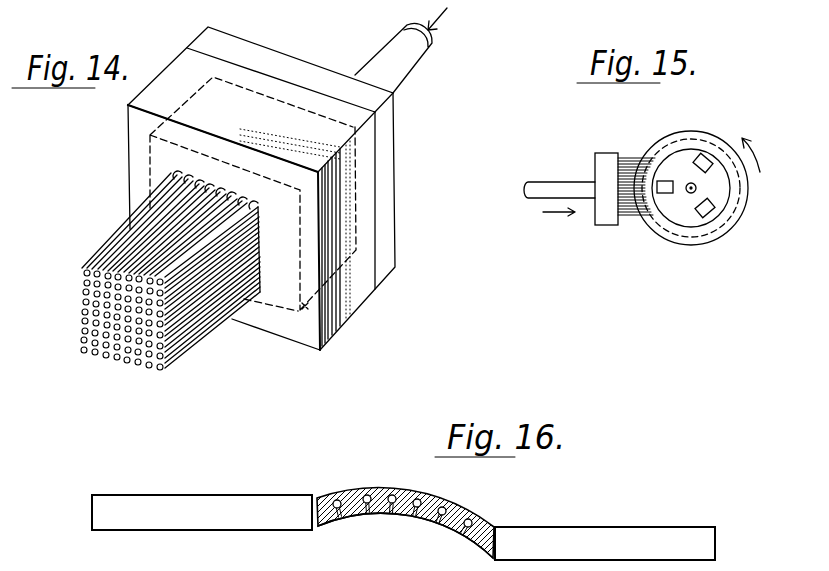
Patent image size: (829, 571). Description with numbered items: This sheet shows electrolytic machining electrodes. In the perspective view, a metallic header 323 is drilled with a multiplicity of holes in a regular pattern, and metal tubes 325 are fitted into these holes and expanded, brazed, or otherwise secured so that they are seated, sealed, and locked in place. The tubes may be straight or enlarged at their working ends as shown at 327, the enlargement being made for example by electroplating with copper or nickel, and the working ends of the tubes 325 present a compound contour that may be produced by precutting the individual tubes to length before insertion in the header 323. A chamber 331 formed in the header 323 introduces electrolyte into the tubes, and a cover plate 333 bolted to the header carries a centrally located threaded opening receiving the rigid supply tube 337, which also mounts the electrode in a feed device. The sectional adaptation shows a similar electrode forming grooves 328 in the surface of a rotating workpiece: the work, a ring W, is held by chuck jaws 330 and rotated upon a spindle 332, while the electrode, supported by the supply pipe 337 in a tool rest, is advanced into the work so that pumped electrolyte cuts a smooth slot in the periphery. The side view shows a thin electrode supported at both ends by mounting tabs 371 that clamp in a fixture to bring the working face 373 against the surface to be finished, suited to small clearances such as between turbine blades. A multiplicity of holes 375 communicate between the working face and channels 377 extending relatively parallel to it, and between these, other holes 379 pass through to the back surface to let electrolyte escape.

In FIG. 14, the metallic header 323 is at (293, 330).
In FIG. 15, the metallic header 323 is at (607, 222).
In FIG. 14, the metal tubes 325 is at (238, 296).
In FIG. 15, the metal tubes 325 is at (625, 162).
In FIG. 14, the enlarged working ends 327 is at (173, 358).
In FIG. 14, the chamber 331 is at (338, 322).
In FIG. 14, the cover plate 333 is at (386, 170).
In FIG. 14, the rigid supply tube 337 is at (390, 52).
In FIG. 15, the rigid supply tube 337 is at (539, 183).
In FIG. 15, the grooves 328 is at (702, 140).
In FIG. 15, the chuck jaws 330 is at (700, 211).
In FIG. 15, the spindle 332 is at (697, 189).
In FIG. 15, the ring W is at (712, 238).
In FIG. 16, the mounting tabs 371 is at (185, 503).
In FIG. 16, the working face 373 is at (350, 516).
In FIG. 16, the holes 375 is at (438, 520).
In FIG. 16, the channels 377 is at (396, 490).
In FIG. 16, the other holes 379 is at (377, 483).